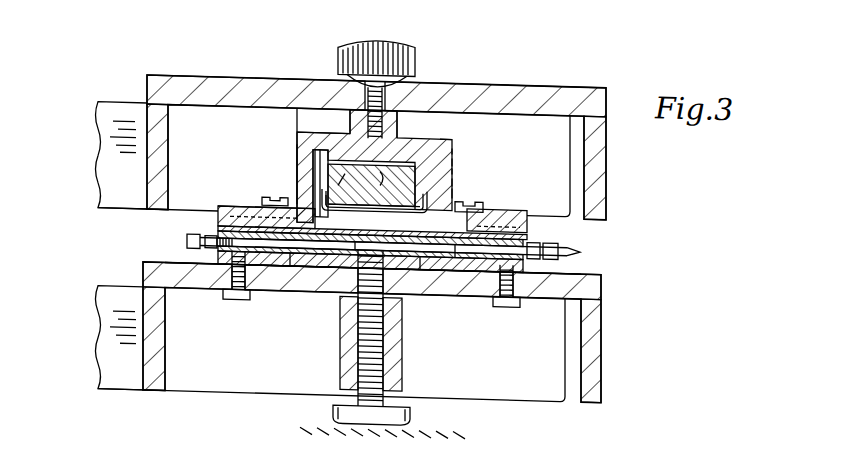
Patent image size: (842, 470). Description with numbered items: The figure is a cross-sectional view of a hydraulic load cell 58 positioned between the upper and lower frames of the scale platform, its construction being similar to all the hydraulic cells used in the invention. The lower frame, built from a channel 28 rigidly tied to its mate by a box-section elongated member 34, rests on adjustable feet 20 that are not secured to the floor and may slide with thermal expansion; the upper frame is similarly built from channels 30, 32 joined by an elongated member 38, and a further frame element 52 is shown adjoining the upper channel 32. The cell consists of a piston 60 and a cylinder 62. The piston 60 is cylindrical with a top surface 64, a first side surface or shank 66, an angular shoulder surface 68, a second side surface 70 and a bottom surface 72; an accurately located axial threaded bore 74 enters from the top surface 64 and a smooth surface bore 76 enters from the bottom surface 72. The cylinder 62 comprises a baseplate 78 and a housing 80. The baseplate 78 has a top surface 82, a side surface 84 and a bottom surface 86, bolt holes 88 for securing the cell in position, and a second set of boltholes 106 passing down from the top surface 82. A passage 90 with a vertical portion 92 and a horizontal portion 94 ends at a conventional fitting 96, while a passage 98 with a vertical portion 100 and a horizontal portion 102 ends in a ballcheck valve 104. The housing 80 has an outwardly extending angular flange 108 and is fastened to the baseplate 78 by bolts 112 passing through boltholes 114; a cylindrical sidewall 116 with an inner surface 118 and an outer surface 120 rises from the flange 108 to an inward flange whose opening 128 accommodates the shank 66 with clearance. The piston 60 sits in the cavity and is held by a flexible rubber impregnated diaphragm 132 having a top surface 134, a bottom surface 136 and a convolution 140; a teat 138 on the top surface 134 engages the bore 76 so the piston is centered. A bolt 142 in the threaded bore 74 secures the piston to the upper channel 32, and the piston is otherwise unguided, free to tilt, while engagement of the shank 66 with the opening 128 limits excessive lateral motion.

The adjustable feet 20 is at (335, 404).
The channel 28 is at (604, 285).
The channel 30 is at (437, 290).
The channel 32 is at (606, 124).
The elongated member 34 is at (100, 352).
The elongated member 38 is at (100, 173).
The bracket 52 is at (535, 105).
The load cell 58 is at (226, 136).
The piston 60 is at (437, 117).
The cylinder 62 is at (452, 154).
The top surface 64 is at (350, 106).
The first side surface 66 is at (310, 126).
The angular shoulder surface 68 is at (300, 141).
The second side surface 70 is at (452, 182).
The bottom surface 72 is at (327, 180).
The threaded bore 74 is at (400, 112).
The smooth surface bore 76 is at (400, 204).
The baseplate 78 is at (282, 240).
The housing 80 is at (296, 153).
The top surface 82 is at (218, 224).
The side surface 84 is at (218, 253).
The bottom surface 86 is at (203, 273).
The bolt holes 88 is at (250, 292).
The passage 90 is at (420, 259).
The vertical portion 92 is at (377, 252).
The horizontal portion 94 is at (455, 244).
The fitting 96 is at (572, 234).
The passage 98 is at (293, 255).
The vertical portion 100 is at (362, 240).
The horizontal portion 102 is at (243, 217).
The ballcheck valve 104 is at (187, 239).
The boltholes 106 is at (238, 204).
The angular flange 108 is at (528, 201).
The bolts 112 is at (280, 192).
The boltholes 114 is at (255, 212).
The cylindrical sidewall 116 is at (452, 143).
The inner surface 118 is at (452, 164).
The outer surface 120 is at (452, 176).
The opening 128 is at (448, 131).
The diaphragm 132 is at (350, 170).
The top surface 134 is at (394, 189).
The bottom surface 136 is at (342, 198).
The teat 138 is at (382, 178).
The convolution 140 is at (378, 201).
The bolt 142 is at (347, 84).